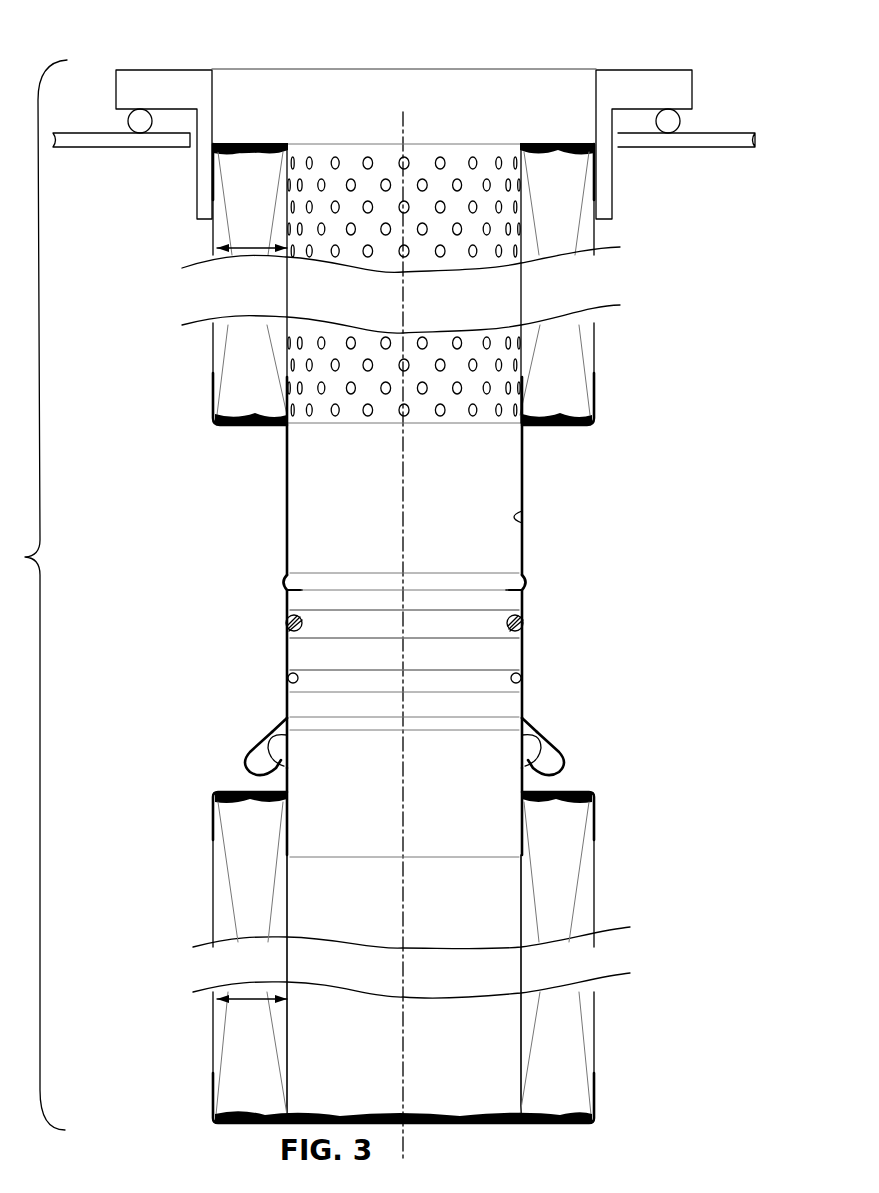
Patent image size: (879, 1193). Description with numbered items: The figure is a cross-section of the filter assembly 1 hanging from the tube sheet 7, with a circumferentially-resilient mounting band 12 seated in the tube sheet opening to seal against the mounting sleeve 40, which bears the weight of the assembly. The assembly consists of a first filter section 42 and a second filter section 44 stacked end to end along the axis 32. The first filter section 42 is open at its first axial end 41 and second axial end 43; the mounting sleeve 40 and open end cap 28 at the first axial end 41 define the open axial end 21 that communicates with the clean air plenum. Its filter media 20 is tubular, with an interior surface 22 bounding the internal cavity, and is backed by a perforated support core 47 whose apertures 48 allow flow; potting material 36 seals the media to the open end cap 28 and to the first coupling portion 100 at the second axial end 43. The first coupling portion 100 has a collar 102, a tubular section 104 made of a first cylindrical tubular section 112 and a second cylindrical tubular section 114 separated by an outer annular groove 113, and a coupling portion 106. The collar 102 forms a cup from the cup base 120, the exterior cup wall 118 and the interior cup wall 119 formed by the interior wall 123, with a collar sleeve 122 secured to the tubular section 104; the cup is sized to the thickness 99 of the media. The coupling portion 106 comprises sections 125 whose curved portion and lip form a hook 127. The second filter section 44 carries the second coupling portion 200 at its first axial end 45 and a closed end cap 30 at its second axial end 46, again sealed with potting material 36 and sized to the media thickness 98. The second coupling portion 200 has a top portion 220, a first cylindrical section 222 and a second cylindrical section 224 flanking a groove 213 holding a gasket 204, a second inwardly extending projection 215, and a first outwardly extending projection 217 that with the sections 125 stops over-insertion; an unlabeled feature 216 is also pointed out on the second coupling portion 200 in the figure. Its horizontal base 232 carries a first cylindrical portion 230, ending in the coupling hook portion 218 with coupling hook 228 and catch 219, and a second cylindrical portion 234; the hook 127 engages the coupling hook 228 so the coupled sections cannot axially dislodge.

The filter assembly 1 is at (37, 595).
The tube sheet 7 is at (73, 140).
The circumferentially-resilient mounting band 12 is at (668, 125).
The filter media 20 is at (590, 232).
The open axial end 21 is at (400, 60).
The interior surface 22 is at (290, 248).
The open end cap 28 is at (236, 148).
The closed end cap 30 is at (570, 1125).
The axis 32 is at (405, 132).
The potting material 36 is at (560, 152).
The mounting sleeve 40 is at (172, 90).
The first axial end 41 is at (202, 190).
The first filter section 42 is at (376, 229).
The second axial end 43 is at (205, 437).
The second filter section 44 is at (381, 957).
The first axial end 45 is at (381, 808).
The second axial end 46 is at (381, 1117).
The perforated support core 47 is at (520, 350).
The apertures 48 is at (508, 368).
The thickness 98 is at (247, 999).
The thickness 99 is at (243, 248).
The first coupling portion 100 is at (415, 630).
The collar 102 is at (346, 405).
The tubular section 104 is at (636, 490).
The coupling portion 106 is at (402, 733).
The first cylindrical tubular section 112 is at (527, 488).
The outer annular groove 113 is at (525, 585).
The second cylindrical tubular section 114 is at (525, 640).
The exterior cup wall 118 is at (218, 392).
The interior cup wall 119 is at (540, 420).
The cup base 120 is at (242, 415).
The collar sleeve 122 is at (283, 468).
The interior wall 123 is at (515, 517).
The sections 125 is at (248, 755).
The hook 127 is at (262, 762).
The second coupling portion 200 is at (402, 715).
The gasket 204 is at (522, 623).
The groove 213 is at (473, 590).
The second inwardly extending projection 215 is at (522, 678).
The wall 216 is at (522, 655).
The first outwardly extending projection 217 is at (527, 720).
The coupling hook portion 218 is at (275, 740).
The catch 219 is at (548, 768).
The top portion 220 is at (300, 590).
The first cylindrical section 222 is at (332, 590).
The second cylindrical section 224 is at (517, 655).
The coupling hook 228 is at (545, 747).
The first cylindrical portion 230 is at (552, 757).
The horizontal base 232 is at (222, 792).
The second cylindrical portion 234 is at (592, 840).